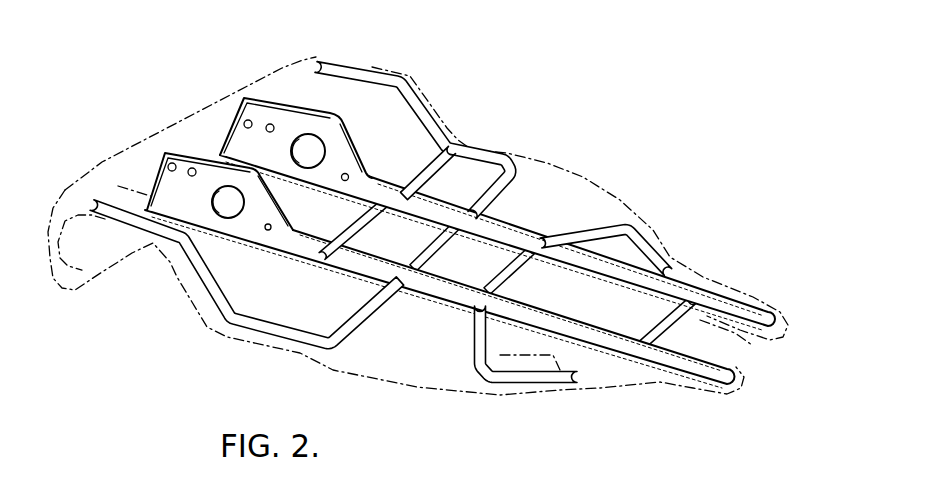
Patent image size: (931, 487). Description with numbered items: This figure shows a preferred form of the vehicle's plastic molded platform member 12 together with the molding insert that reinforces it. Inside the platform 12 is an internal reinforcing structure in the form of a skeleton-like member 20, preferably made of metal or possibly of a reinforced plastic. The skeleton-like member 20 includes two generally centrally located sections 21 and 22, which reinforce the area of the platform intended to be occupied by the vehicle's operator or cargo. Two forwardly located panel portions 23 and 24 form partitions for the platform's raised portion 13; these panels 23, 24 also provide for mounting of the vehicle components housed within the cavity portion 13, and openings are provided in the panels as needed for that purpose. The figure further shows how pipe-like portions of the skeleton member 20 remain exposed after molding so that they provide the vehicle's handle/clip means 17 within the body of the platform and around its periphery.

The platform member 12 is at (603, 193).
The raised portion 13 is at (285, 73).
The handle/clip means 17 is at (360, 70).
The skeleton-like member 20 is at (460, 271).
The centrally located section 21 is at (404, 252).
The centrally located section 22 is at (590, 308).
The panel portion 23 is at (303, 113).
The panel portion 24 is at (190, 159).